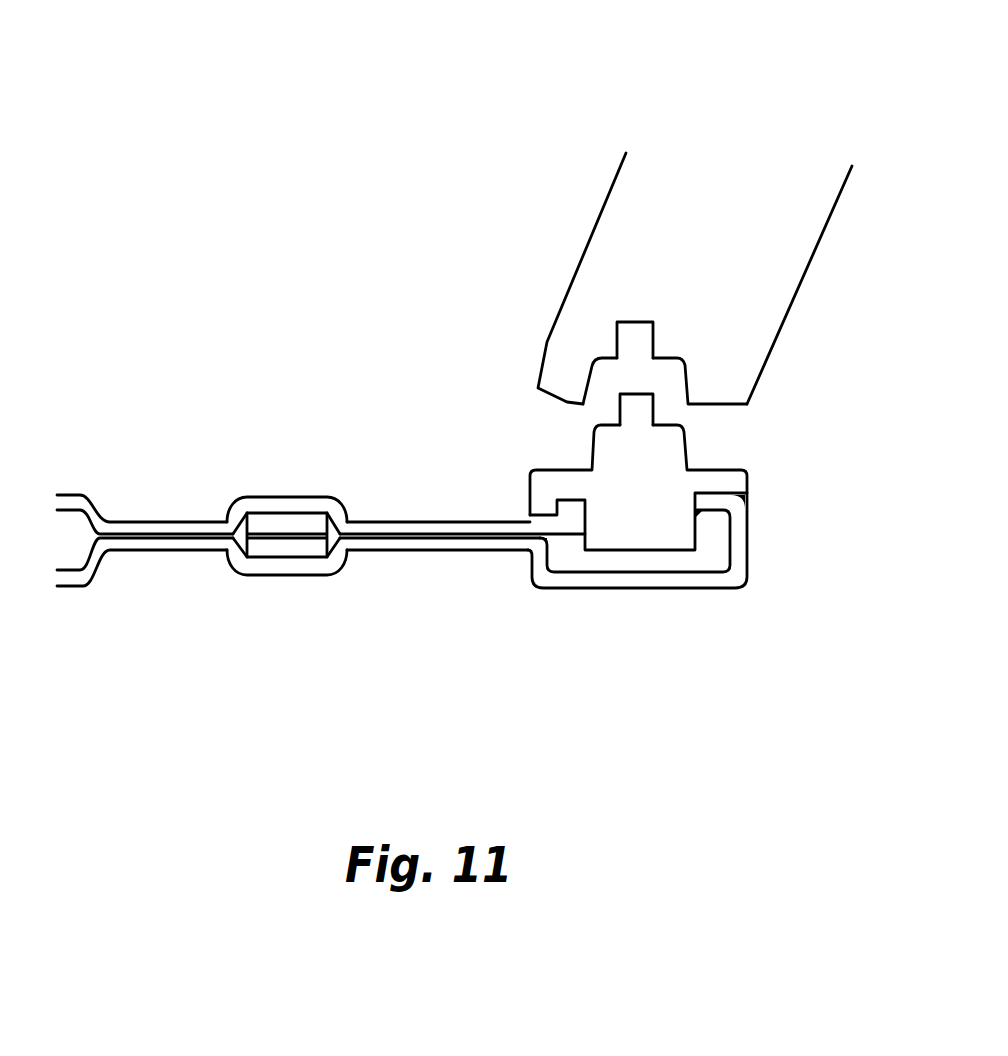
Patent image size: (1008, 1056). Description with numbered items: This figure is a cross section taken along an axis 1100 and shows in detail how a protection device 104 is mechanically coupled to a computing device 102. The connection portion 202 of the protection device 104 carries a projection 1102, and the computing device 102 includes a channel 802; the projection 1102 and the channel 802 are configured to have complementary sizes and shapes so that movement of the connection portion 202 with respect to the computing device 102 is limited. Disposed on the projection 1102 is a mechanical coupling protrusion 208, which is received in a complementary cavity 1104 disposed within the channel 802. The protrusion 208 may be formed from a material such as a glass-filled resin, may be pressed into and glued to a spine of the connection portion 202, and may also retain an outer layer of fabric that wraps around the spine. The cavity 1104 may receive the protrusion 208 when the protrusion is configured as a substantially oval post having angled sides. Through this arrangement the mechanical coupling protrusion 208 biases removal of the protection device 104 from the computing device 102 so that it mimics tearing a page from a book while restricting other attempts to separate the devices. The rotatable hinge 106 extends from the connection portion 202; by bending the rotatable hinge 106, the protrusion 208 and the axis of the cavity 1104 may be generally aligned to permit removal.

The axis 1100 is at (158, 81).
The computing device 102 is at (583, 116).
The channel 802 is at (685, 361).
The cavity 1104 is at (637, 322).
The projection 1102 is at (685, 442).
The mechanical coupling protrusion 208 is at (620, 394).
The protection device 104 is at (141, 685).
The rotatable hinge 106 is at (369, 435).
The connection portion 202 is at (788, 650).